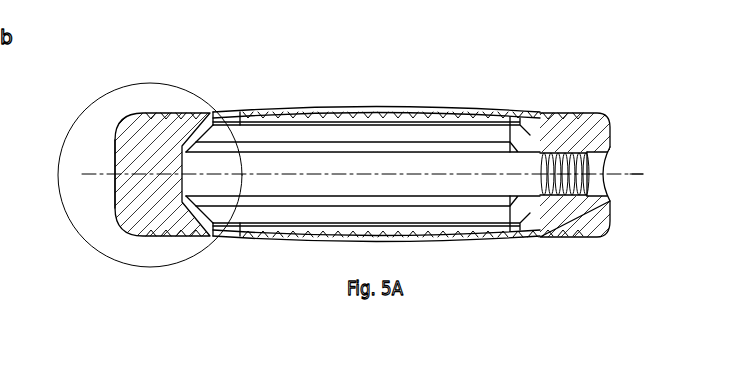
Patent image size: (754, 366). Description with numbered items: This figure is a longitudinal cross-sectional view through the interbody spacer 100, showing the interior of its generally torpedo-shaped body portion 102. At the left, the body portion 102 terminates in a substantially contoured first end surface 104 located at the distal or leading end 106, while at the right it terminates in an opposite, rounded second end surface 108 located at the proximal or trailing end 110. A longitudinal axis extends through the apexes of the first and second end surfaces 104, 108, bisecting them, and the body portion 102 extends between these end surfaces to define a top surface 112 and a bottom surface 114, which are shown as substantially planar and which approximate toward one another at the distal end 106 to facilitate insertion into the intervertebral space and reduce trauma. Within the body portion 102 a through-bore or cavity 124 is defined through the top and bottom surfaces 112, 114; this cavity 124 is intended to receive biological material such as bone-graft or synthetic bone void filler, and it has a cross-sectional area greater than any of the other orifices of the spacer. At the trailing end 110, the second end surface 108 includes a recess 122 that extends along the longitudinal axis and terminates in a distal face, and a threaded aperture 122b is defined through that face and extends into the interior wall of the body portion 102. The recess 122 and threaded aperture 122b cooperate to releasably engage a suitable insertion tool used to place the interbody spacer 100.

The interbody spacer 100 is at (503, 72).
The body portion 102 is at (570, 237).
The first end surface 104 is at (115, 152).
The distal or leading end 106 is at (115, 184).
The second end surface 108 is at (617, 128).
The proximal or trailing end 110 is at (660, 186).
The top surface 112 is at (232, 110).
The bottom surface 114 is at (232, 240).
The recess 122 is at (610, 163).
The threaded aperture 122b is at (607, 188).
The through-bore or cavity 124 is at (367, 170).